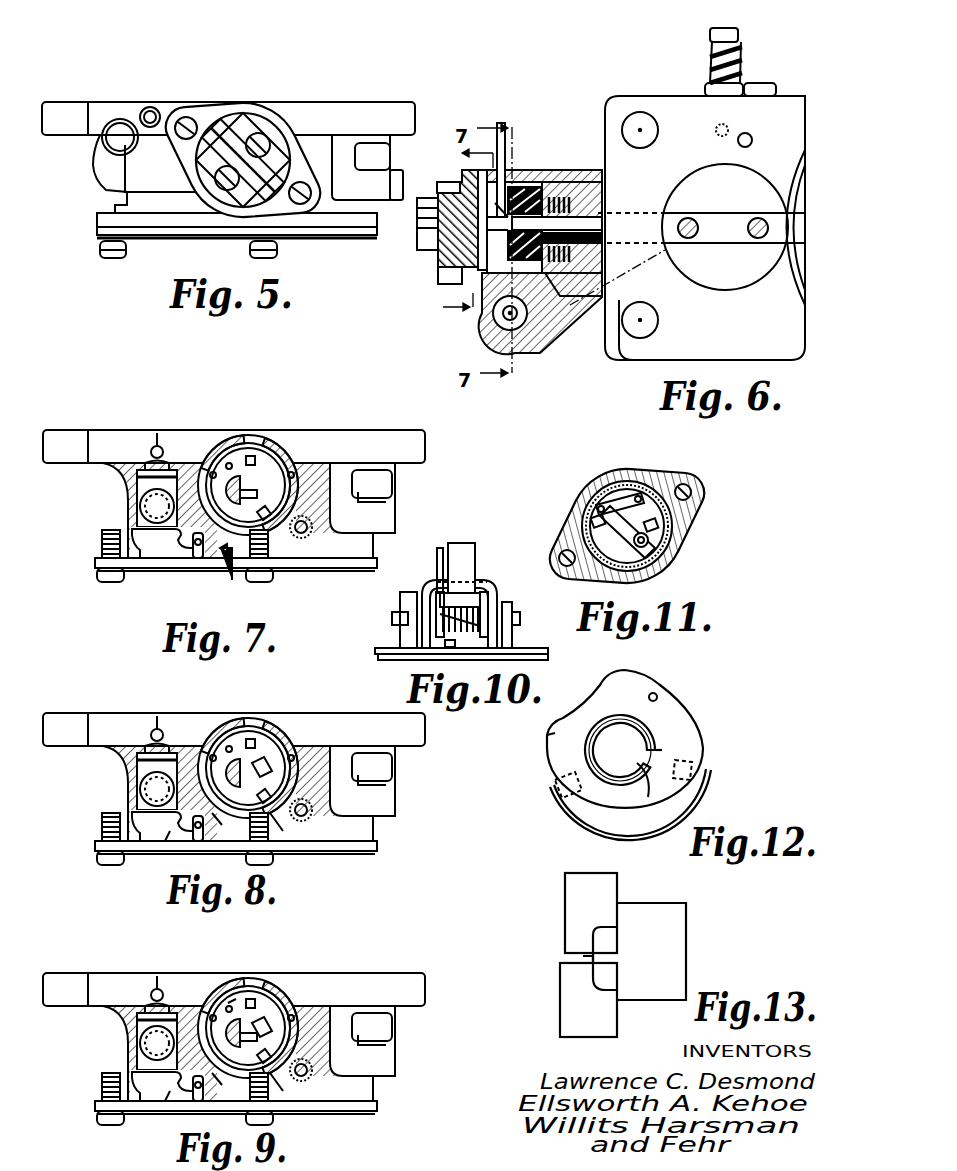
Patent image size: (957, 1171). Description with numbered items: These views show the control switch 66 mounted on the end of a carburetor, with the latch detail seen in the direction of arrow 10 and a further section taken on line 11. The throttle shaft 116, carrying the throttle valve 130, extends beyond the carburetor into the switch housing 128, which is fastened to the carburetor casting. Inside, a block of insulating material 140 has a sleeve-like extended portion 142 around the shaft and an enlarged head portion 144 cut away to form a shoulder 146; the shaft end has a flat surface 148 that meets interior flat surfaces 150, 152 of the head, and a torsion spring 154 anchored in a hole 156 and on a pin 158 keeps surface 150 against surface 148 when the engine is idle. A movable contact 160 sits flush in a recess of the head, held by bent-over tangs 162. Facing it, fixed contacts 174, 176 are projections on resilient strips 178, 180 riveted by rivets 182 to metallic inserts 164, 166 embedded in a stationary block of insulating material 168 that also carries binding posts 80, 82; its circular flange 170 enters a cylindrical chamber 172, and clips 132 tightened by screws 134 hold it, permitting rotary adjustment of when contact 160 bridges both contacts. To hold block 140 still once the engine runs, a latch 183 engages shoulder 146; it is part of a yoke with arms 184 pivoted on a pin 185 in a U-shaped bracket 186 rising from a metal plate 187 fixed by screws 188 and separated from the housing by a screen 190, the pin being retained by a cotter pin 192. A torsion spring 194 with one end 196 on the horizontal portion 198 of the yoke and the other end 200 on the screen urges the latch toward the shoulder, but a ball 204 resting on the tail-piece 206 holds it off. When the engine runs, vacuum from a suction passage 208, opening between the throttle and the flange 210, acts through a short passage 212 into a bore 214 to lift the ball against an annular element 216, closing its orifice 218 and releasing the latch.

In FIG. 7, the arrow 10 is at (235, 573).
In FIG. 6, the section line 11— 11 is at (461, 240).
In FIG. 5, the control switch 66 is at (241, 122).
In FIG. 6, the control switch 66 is at (437, 262).
In FIG. 5, the binding post 80 is at (252, 132).
In FIG. 5, the binding post 82 is at (225, 188).
In FIG. 6, the throttle shaft 116 is at (730, 222).
In FIG. 8, the throttle shaft 116 is at (295, 848).
In FIG. 6, the switch housing 128 is at (505, 320).
In FIG. 7, the switch housing 128 is at (234, 494).
In FIG. 8, the switch housing 128 is at (234, 764).
In FIG. 9, the switch housing 128 is at (234, 1037).
In FIG. 6, the throttle valve 130 is at (697, 180).
In FIG. 5, the clips 132 is at (200, 121).
In FIG. 5, the screws 134 is at (183, 118).
In FIG. 6, the screws 134 is at (437, 296).
In FIG. 6, the block of insulating material 140 is at (528, 275).
In FIG. 9, the block of insulating material 140 is at (313, 1105).
In FIG. 12, the block of insulating material 140 is at (690, 706).
In FIG. 13, the block of insulating material 140 is at (565, 903).
In FIG. 6, the extended portion 142 is at (560, 262).
In FIG. 13, the extended portion 142 is at (672, 903).
In FIG. 6, the head portion 144 is at (526, 185).
In FIG. 8, the shoulder 146 is at (214, 808).
In FIG. 9, the shoulder 146 is at (206, 1014).
In FIG. 12, the shoulder 146 is at (603, 688).
In FIG. 6, the flat surface 148 is at (541, 180).
In FIG. 7, the flat surface 148 is at (279, 480).
In FIG. 9, the flat surface 148 is at (284, 1022).
In FIG. 7, the flat surface 150 is at (273, 454).
In FIG. 9, the flat surface 150 is at (257, 983).
In FIG. 12, the flat surface 150 is at (660, 750).
In FIG. 8, the flat surface 152 is at (301, 779).
In FIG. 9, the flat surface 152 is at (291, 980).
In FIG. 12, the flat surface 152 is at (637, 800).
In FIG. 6, the torsion spring 154 is at (556, 194).
In FIG. 7, the hole 156 is at (227, 434).
In FIG. 9, the hole 156 is at (194, 978).
In FIG. 12, the hole 156 is at (657, 694).
In FIG. 6, the pin 158 is at (590, 185).
In FIG. 7, the movable contact 160 is at (270, 457).
In FIG. 8, the movable contact 160 is at (296, 745).
In FIG. 9, the movable contact 160 is at (284, 1005).
In FIG. 12, the movable contact 160 is at (578, 810).
In FIG. 7, the tangs 162 is at (319, 539).
In FIG. 8, the tangs 162 is at (261, 749).
In FIG. 9, the tangs 162 is at (328, 1078).
In FIG. 12, the tangs 162 is at (700, 760).
In FIG. 13, the tangs 162 is at (606, 960).
In FIG. 11, the metallic insert 164 is at (650, 552).
In FIG. 11, the metallic insert 166 is at (622, 497).
In FIG. 5, the block of insulating material 168 is at (248, 200).
In FIG. 6, the block of insulating material 168 is at (437, 237).
In FIG. 6, the circular flange 170 is at (462, 287).
In FIG. 11, the circular flange 170 is at (666, 528).
In FIG. 6, the cylindrical chamber 172 is at (496, 122).
In FIG. 7, the fixed contact 174 is at (244, 422).
In FIG. 8, the fixed contact 174 is at (253, 742).
In FIG. 9, the fixed contact 174 is at (238, 968).
In FIG. 11, the fixed contact 174 is at (652, 486).
In FIG. 7, the fixed contact 176 is at (280, 472).
In FIG. 8, the fixed contact 176 is at (275, 768).
In FIG. 9, the fixed contact 176 is at (282, 1012).
In FIG. 11, the fixed contact 176 is at (593, 492).
In FIG. 11, the resilient strip 178 is at (630, 494).
In FIG. 11, the resilient strip 180 is at (596, 569).
In FIG. 6, the rivets 182 is at (478, 178).
In FIG. 11, the rivets 182 is at (649, 540).
In FIG. 9, the latch 183 is at (220, 1083).
In FIG. 10, the latch 183 is at (460, 543).
In FIG. 10, the arms 184 is at (427, 604).
In FIG. 10, the pin 185 is at (392, 617).
In FIG. 7, the U-shaped bracket 186 is at (185, 567).
In FIG. 8, the U-shaped bracket 186 is at (184, 844).
In FIG. 10, the U-shaped bracket 186 is at (512, 608).
In FIG. 5, the metal plate 187 is at (182, 238).
In FIG. 7, the metal plate 187 is at (236, 593).
In FIG. 8, the metal plate 187 is at (207, 852).
In FIG. 9, the metal plate 187 is at (236, 1121).
In FIG. 10, the metal plate 187 is at (385, 657).
In FIG. 5, the screws 188 is at (272, 252).
In FIG. 7, the screws 188 is at (183, 564).
In FIG. 8, the screws 188 is at (209, 862).
In FIG. 9, the screws 188 is at (167, 1115).
In FIG. 7, the screen 190 is at (236, 579).
In FIG. 8, the screen 190 is at (236, 861).
In FIG. 10, the screen 190 is at (523, 647).
In FIG. 8, the cotter pin 192 is at (153, 871).
In FIG. 9, the cotter pin 192 is at (178, 1111).
In FIG. 10, the cotter pin 192 is at (398, 635).
In FIG. 10, the torsion spring 194 is at (442, 620).
In FIG. 10, the spring end 196 is at (484, 578).
In FIG. 10, the horizontal portion 198 is at (439, 590).
In FIG. 10, the spring end 200 is at (448, 643).
In FIG. 7, the ball 204 is at (118, 507).
In FIG. 8, the ball 204 is at (113, 789).
In FIG. 9, the ball 204 is at (119, 1043).
In FIG. 7, the tail-piece 206 is at (132, 541).
In FIG. 8, the tail-piece 206 is at (130, 820).
In FIG. 9, the tail-piece 206 is at (167, 1118).
In FIG. 10, the tail-piece 206 is at (444, 548).
In FIG. 6, the suction passage 208 is at (663, 258).
In FIG. 6, the flange 210 is at (660, 347).
In FIG. 7, the short passage 212 is at (157, 467).
In FIG. 8, the short passage 212 is at (145, 751).
In FIG. 9, the short passage 212 is at (118, 1023).
In FIG. 7, the bore 214 is at (101, 510).
In FIG. 8, the bore 214 is at (98, 793).
In FIG. 9, the bore 214 is at (86, 1053).
In FIG. 7, the annular element 216 is at (183, 425).
In FIG. 8, the annular element 216 is at (163, 706).
In FIG. 7, the orifice 218 is at (127, 439).
In FIG. 8, the orifice 218 is at (117, 718).